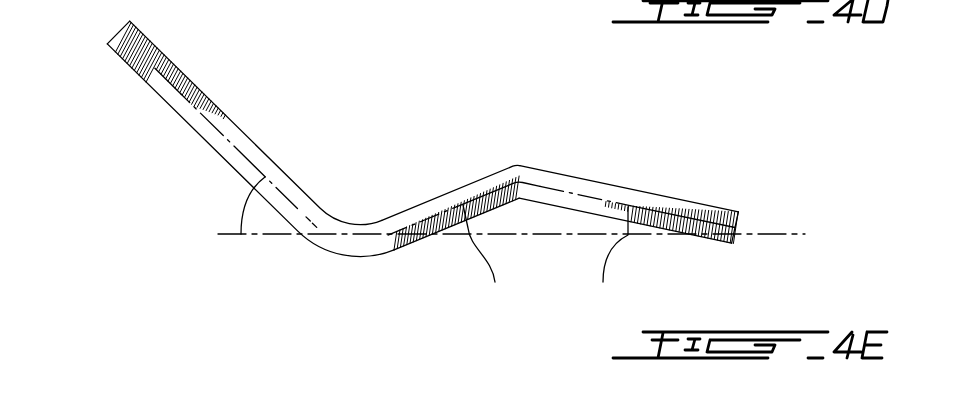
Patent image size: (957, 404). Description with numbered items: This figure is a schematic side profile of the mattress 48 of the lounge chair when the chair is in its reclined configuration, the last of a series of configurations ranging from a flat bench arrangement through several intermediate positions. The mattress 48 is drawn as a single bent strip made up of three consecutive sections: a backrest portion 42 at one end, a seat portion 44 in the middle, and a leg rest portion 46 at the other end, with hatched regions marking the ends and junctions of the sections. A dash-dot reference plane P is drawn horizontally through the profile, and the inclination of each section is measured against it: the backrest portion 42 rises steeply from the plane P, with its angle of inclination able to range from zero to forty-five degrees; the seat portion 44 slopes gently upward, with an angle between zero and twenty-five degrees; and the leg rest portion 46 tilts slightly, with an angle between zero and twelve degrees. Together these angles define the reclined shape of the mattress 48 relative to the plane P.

The backrest portion 42 is at (226, 116).
The seat portion 44 is at (438, 196).
The leg rest portion 46 is at (680, 197).
The mattress 48 is at (109, 31).
The plane P is at (275, 237).